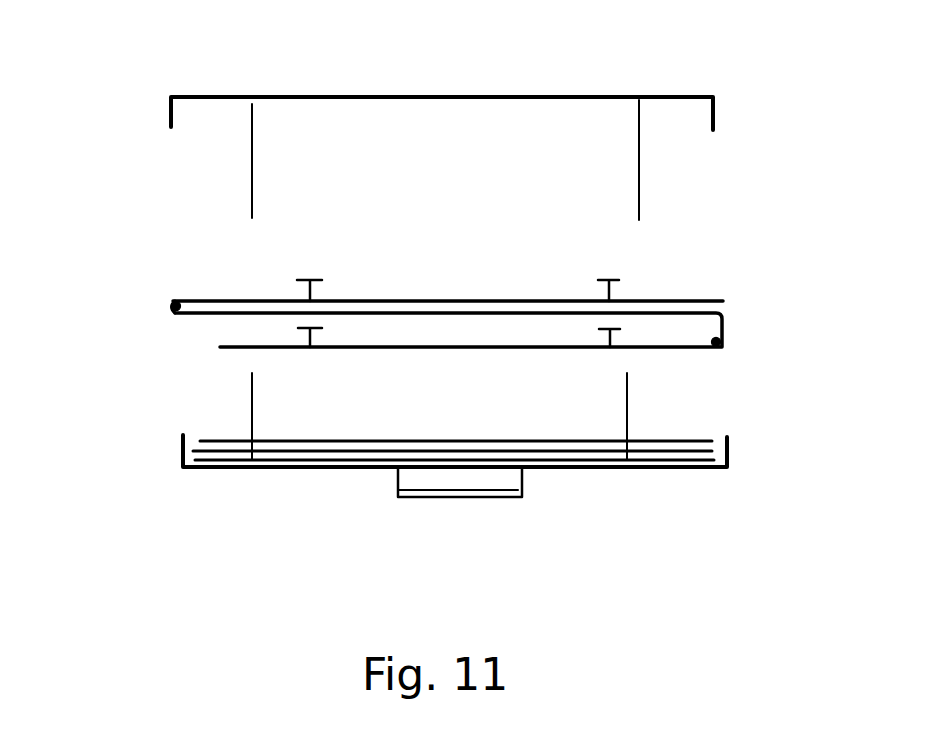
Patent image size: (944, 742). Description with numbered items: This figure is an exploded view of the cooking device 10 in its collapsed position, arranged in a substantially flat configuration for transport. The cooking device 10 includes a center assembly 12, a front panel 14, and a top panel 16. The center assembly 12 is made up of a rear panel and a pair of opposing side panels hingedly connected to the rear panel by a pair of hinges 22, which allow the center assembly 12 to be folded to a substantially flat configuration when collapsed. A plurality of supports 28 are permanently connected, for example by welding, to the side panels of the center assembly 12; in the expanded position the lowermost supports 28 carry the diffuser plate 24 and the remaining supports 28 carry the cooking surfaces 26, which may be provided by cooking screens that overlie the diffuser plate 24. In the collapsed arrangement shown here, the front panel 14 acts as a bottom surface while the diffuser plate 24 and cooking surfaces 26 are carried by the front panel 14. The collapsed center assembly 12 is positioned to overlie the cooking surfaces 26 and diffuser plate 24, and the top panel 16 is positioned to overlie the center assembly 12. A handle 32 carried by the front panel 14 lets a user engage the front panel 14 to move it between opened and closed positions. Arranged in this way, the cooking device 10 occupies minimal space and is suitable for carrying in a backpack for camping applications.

The cooking device 10 is at (821, 136).
The center assembly 12 is at (460, 290).
The front panel 14 is at (730, 455).
The top panel 16 is at (335, 85).
The hinges 22 is at (163, 305).
The diffuser plate 24 is at (233, 438).
The cooking surfaces 26 is at (222, 457).
The supports 28 is at (607, 330).
The handle 32 is at (507, 502).